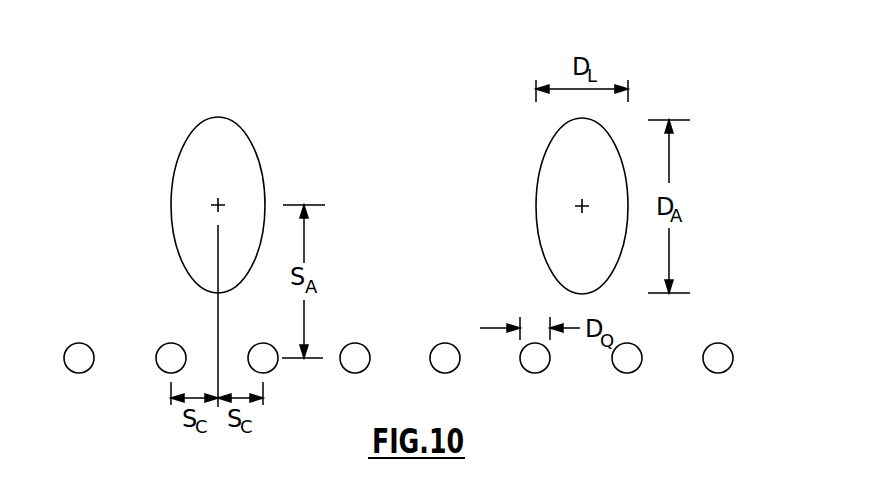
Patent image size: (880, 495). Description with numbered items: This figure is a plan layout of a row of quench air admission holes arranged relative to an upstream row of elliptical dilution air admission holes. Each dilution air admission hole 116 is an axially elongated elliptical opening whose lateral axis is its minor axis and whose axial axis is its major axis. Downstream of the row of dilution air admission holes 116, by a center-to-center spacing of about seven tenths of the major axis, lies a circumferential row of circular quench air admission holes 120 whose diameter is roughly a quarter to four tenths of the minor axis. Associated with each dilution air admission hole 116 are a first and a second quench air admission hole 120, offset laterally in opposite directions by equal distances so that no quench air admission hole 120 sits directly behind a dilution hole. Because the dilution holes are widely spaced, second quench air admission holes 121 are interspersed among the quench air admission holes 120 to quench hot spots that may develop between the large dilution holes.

The dilution air admission hole 116 is at (182, 148).
The quench air admission hole 120 is at (171, 343).
The second quench air admission hole 121 is at (86, 371).